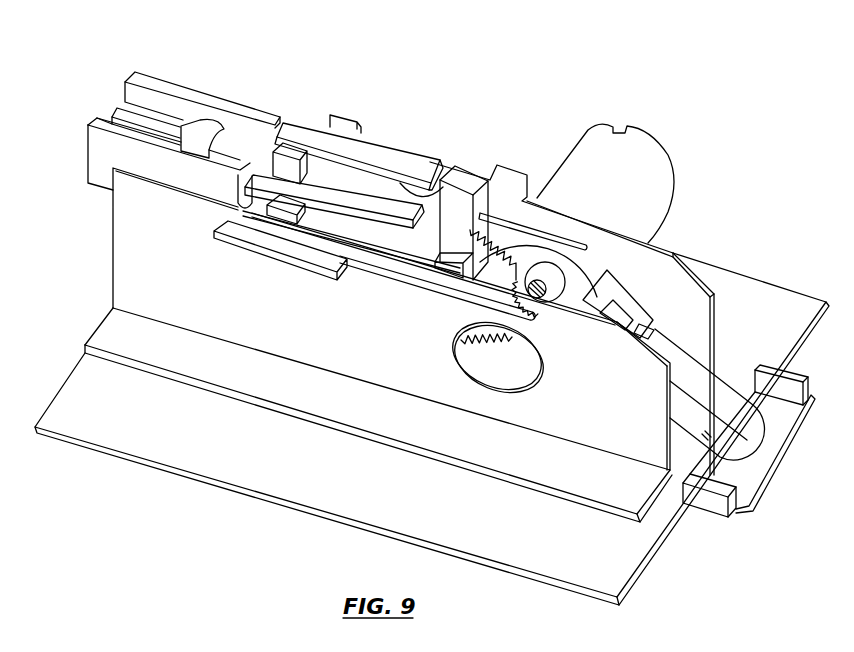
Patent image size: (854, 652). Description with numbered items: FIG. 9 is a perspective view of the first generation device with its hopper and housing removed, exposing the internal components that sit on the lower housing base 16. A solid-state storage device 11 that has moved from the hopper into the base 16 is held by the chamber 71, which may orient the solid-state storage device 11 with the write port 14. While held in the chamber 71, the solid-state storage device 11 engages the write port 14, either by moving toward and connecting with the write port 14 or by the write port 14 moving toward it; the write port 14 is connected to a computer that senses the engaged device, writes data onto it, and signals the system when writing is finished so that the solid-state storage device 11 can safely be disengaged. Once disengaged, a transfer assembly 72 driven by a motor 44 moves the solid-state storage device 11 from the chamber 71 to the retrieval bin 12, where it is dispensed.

The solid-state storage device 11 is at (758, 442).
The retrieval bin 12 is at (752, 512).
The write port 14 is at (262, 117).
The lower housing base 16 is at (733, 254).
The motor 44 is at (640, 145).
The chamber 71 is at (381, 182).
The transfer assembly 72 is at (467, 196).